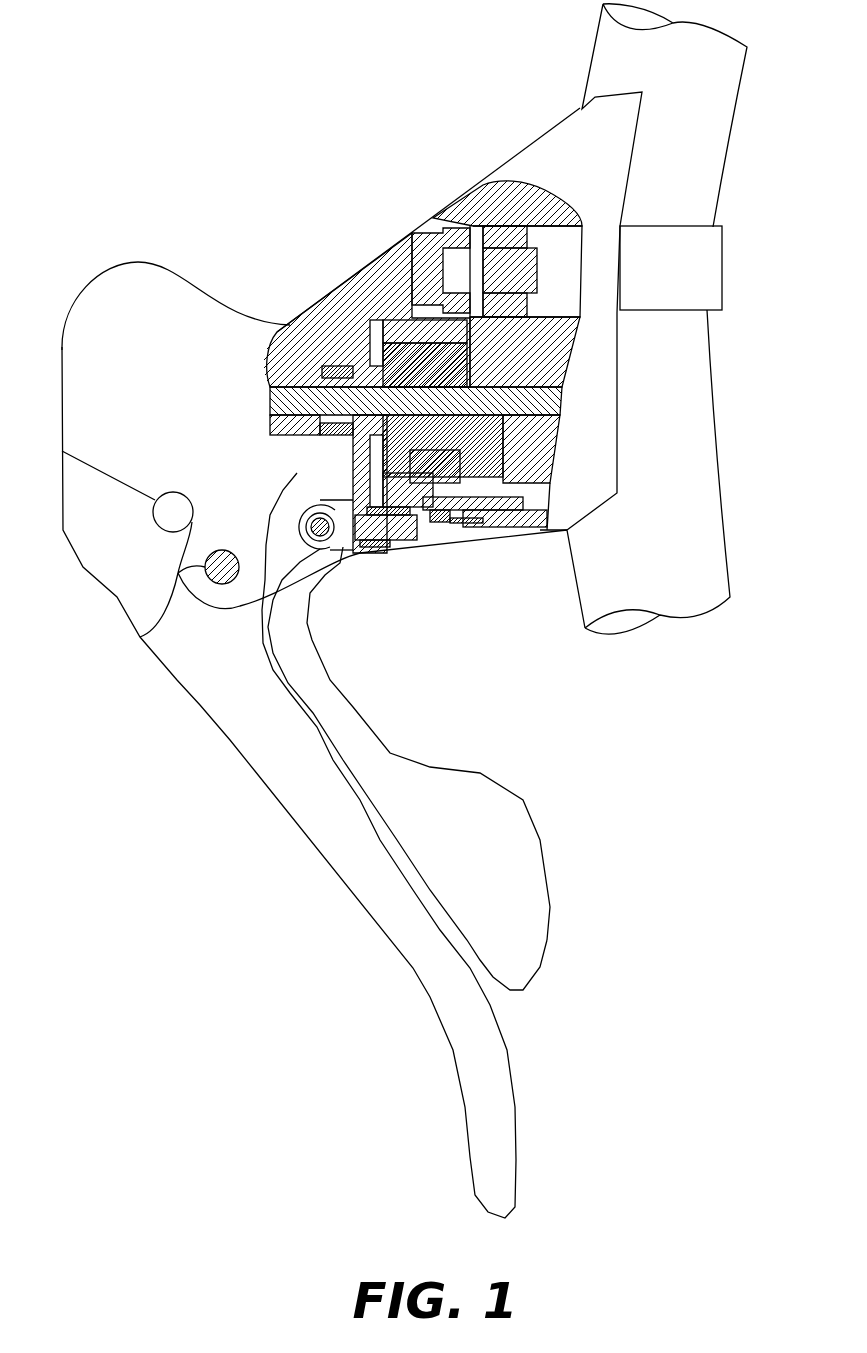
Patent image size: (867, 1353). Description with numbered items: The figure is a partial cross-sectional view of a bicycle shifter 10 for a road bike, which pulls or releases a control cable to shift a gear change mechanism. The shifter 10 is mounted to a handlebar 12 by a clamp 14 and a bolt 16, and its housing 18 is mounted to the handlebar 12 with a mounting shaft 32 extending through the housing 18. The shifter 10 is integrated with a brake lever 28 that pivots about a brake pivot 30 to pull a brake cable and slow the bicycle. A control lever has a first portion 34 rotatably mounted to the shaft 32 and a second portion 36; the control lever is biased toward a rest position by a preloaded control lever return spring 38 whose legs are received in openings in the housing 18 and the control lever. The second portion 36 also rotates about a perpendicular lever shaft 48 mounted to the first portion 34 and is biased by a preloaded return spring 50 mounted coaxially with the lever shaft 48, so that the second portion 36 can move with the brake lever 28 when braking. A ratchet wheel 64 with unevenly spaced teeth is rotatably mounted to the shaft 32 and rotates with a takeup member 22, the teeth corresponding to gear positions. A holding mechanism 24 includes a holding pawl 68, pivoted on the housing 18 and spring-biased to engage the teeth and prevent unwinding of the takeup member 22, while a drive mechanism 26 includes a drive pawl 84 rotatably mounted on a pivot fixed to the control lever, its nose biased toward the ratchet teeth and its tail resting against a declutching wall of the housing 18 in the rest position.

The bicycle shifter 10 is at (330, 158).
The handlebar 12 is at (593, 46).
The clamp 14 is at (513, 213).
The bolt 16 is at (412, 263).
The housing 18 is at (560, 150).
The takeup member 22 is at (367, 352).
The holding mechanism 24 is at (495, 543).
The drive mechanism 26 is at (440, 548).
The brake lever 28 is at (216, 726).
The brake pivot 30 is at (133, 638).
The mounting shaft 32 is at (270, 388).
The first portion 34 is at (398, 552).
The second portion 36 is at (530, 868).
The control lever return spring 38 is at (305, 328).
The lever shaft 48 is at (327, 500).
The return spring 50 is at (332, 575).
The ratchet wheel 64 is at (390, 330).
The holding pawl 68 is at (448, 528).
The drive pawl 84 is at (400, 553).